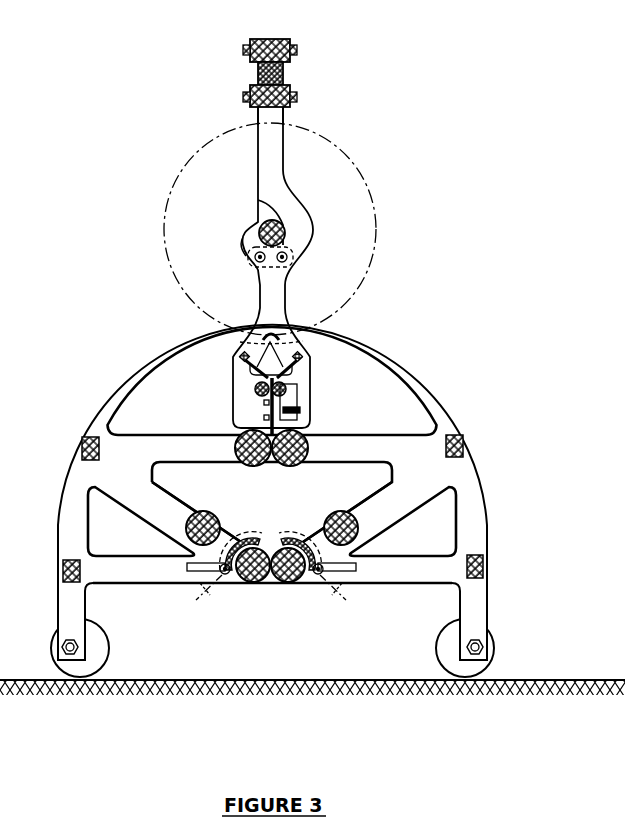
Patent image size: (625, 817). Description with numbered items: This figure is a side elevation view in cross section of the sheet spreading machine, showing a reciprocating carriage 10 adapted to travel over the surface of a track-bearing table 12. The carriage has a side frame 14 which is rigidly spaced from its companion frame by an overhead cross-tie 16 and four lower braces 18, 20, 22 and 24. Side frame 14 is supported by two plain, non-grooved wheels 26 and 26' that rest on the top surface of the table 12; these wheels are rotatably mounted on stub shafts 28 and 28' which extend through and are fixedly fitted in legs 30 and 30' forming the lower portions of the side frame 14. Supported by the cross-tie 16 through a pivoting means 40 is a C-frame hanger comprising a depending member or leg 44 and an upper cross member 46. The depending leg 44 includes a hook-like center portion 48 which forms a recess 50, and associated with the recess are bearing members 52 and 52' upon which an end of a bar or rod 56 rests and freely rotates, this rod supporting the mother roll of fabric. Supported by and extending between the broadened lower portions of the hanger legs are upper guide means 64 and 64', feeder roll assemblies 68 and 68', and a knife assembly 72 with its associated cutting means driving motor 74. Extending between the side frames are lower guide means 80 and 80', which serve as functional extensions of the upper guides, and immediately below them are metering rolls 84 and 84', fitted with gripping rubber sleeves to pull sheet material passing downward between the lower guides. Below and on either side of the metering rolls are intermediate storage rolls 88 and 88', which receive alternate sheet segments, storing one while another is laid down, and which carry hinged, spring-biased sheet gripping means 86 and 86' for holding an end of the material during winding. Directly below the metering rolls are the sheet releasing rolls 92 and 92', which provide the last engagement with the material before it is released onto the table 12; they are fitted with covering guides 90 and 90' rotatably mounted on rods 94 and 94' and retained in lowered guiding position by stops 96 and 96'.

The reciprocating carriage 10 is at (520, 486).
The track-bearing table 12 is at (578, 678).
The side frame 14 is at (430, 371).
The overhead cross-tie 16 is at (268, 38).
The lower brace 18 is at (80, 445).
The lower brace 20 is at (466, 445).
The lower brace 22 is at (63, 565).
The lower brace 24 is at (486, 562).
The plain wheel 26 is at (56, 647).
The plain wheel 26' is at (493, 644).
The stub shaft 28 is at (40, 654).
The stub shaft 28' is at (509, 654).
The leg 30 is at (52, 625).
The leg 30' is at (497, 624).
The pivoting means 40 is at (258, 75).
The depending member 44 is at (286, 121).
The upper cross member 46 is at (291, 97).
The hook-like center portion 48 is at (244, 240).
The recess 50 is at (299, 225).
The bearing member 52 is at (250, 266).
The bearing member 52' is at (311, 268).
The rod 56 is at (257, 225).
The upper guide means 64 is at (234, 365).
The upper guide means 64' is at (313, 365).
The feeder roll assembly 68 is at (234, 390).
The feeder roll assembly 68' is at (311, 390).
The knife assembly 72 is at (302, 410).
The cutting means driving motor 74 is at (300, 397).
The lower guide means 80 is at (235, 426).
The lower guide means 80' is at (313, 426).
The metering roll 84 is at (233, 448).
The metering roll 84' is at (317, 448).
The sheet gripping means 86 is at (199, 513).
The sheet gripping means 86' is at (346, 513).
The intermediate storage roll 88 is at (200, 516).
The intermediate storage roll 88' is at (355, 520).
The covering guide 90 is at (255, 534).
The covering guide 90' is at (296, 543).
The sheet releasing roll 92 is at (252, 581).
The sheet releasing roll 92' is at (297, 581).
The rod 94 is at (210, 596).
The rod 94' is at (340, 596).
The stop 96 is at (191, 568).
The stop 96' is at (355, 568).